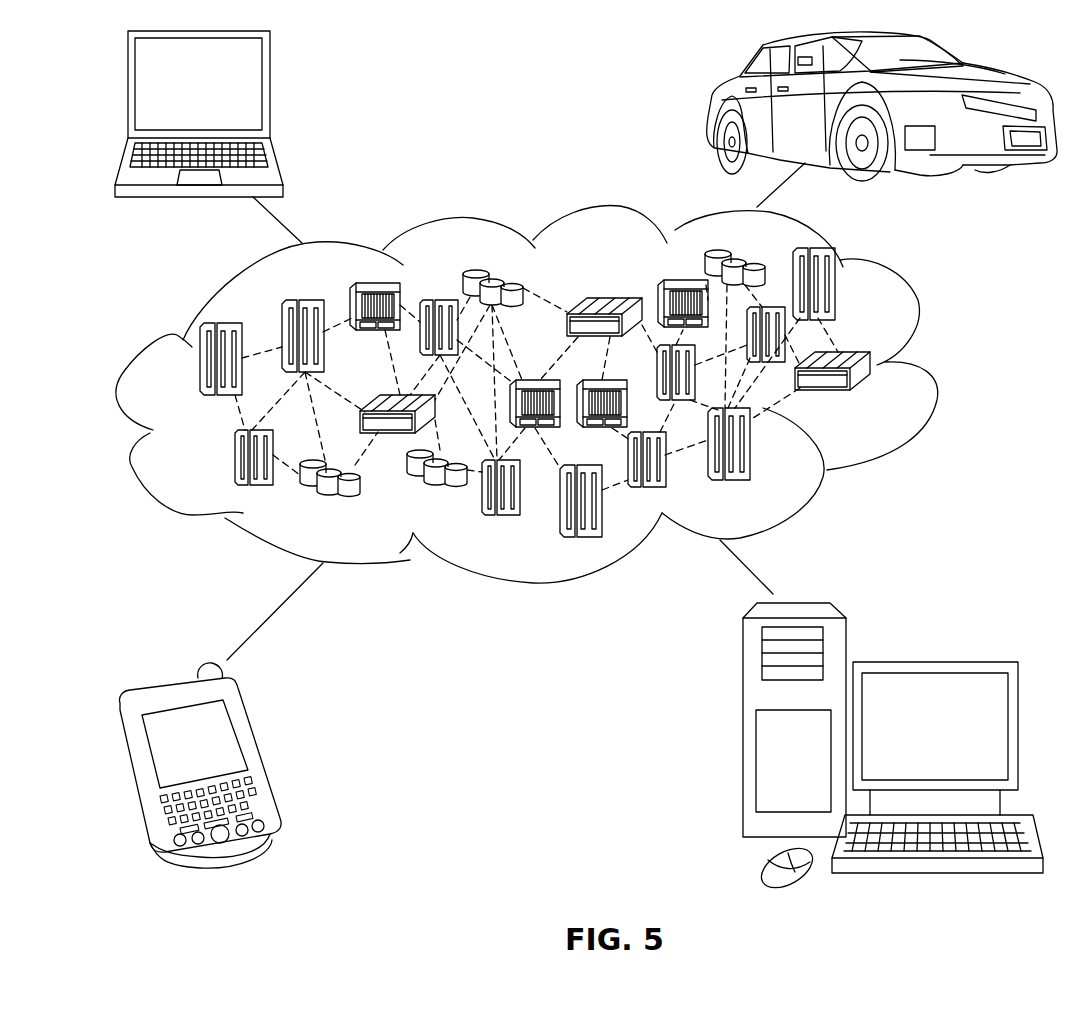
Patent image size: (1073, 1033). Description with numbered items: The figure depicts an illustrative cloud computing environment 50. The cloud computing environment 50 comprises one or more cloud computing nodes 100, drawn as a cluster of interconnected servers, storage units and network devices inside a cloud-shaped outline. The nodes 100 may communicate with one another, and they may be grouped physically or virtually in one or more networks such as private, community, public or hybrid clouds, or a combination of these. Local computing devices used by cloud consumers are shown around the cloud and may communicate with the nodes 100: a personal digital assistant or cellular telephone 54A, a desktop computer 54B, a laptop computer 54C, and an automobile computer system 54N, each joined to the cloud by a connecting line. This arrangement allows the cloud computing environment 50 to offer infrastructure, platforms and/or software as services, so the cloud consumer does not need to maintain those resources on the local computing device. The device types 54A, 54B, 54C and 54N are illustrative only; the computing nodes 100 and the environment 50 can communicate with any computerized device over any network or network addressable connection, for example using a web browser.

The cloud computing environment 50 is at (930, 366).
The cloud computing nodes 100 is at (876, 400).
The personal digital assistant or cellular telephone 54A is at (258, 757).
The desktop computer 54B is at (933, 662).
The laptop computer 54C is at (270, 92).
The automobile computer system 54N is at (718, 112).